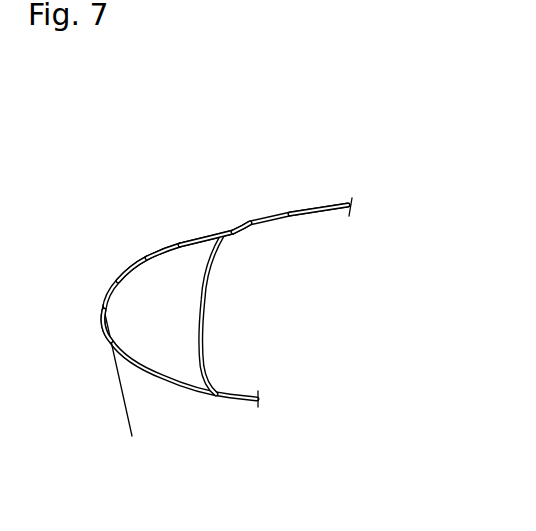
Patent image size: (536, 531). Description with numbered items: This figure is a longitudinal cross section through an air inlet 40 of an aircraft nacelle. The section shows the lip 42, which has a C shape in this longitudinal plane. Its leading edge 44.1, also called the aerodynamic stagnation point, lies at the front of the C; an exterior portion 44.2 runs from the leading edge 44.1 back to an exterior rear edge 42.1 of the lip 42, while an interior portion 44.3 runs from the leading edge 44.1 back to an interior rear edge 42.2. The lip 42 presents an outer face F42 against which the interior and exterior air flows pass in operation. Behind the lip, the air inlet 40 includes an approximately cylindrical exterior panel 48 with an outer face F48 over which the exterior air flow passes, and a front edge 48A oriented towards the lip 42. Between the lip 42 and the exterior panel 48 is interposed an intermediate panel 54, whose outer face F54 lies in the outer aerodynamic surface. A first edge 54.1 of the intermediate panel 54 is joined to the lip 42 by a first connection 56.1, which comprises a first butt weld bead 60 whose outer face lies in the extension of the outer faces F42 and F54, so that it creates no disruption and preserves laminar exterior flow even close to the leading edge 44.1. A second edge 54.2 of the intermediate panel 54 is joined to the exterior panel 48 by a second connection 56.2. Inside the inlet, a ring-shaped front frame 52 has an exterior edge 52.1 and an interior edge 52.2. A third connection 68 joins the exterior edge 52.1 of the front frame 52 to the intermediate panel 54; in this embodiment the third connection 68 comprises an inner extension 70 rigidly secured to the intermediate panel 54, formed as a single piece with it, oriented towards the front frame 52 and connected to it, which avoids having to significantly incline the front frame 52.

The air inlet 40 is at (221, 301).
The lip 42 is at (118, 252).
The exterior rear edge 42.1 is at (149, 251).
The interior rear edge 42.2 is at (257, 403).
The leading edge 44.1 is at (84, 317).
The exterior portion 44.2 is at (133, 242).
The interior portion 44.3 is at (136, 400).
The exterior panel 48 is at (326, 193).
The front edge 48A is at (276, 214).
The front frame 52 is at (226, 338).
The exterior edge 52.1 is at (226, 246).
The interior edge 52.2 is at (217, 391).
The intermediate panel 54 is at (232, 207).
The first edge 54.1 is at (200, 222).
The second edge 54.2 is at (239, 222).
The first connection 56.1 is at (112, 283).
The second connection 56.2 is at (278, 244).
The first butt weld bead 60 is at (191, 217).
The third connection 68 is at (259, 200).
The inner extension 70 is at (189, 268).
The outer face F42 is at (133, 242).
The outer face F48 is at (283, 210).
The outer face F54 is at (212, 228).